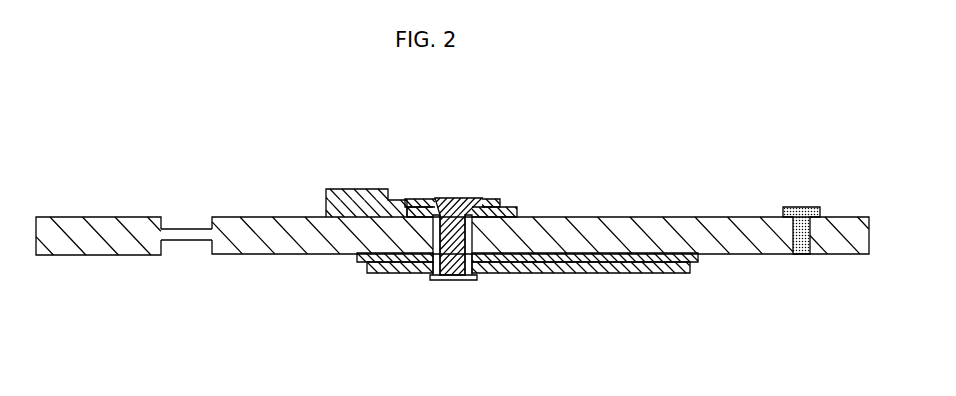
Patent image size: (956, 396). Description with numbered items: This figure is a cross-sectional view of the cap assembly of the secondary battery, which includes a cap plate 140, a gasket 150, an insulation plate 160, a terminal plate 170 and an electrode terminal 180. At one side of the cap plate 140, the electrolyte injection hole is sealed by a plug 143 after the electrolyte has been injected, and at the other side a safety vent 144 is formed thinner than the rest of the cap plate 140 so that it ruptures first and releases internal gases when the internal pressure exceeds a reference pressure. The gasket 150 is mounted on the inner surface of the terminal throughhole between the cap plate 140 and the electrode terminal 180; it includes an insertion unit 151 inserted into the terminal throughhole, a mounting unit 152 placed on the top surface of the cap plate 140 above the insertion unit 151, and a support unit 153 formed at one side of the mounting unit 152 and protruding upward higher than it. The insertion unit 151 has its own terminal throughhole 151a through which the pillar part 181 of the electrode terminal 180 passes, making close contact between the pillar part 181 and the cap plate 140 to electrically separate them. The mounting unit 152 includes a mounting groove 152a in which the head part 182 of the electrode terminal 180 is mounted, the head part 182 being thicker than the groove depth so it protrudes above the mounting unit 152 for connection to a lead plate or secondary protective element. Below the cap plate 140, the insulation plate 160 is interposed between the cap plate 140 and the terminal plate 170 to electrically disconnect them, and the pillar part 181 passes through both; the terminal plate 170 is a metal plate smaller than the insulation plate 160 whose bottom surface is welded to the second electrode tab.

The cap plate 140 is at (96, 222).
The plug 143 is at (800, 207).
The safety vent 144 is at (183, 232).
The gasket 150 is at (437, 145).
The insertion unit 151 is at (536, 216).
The terminal throughhole 151a is at (452, 171).
The mounting unit 152 is at (510, 202).
The mounting groove 152a is at (432, 205).
The support unit 153 is at (355, 188).
The insulation plate 160 is at (555, 262).
The terminal plate 170 is at (618, 274).
The electrode terminal 180 is at (443, 287).
The pillar part 181 is at (465, 266).
The head part 182 is at (408, 258).